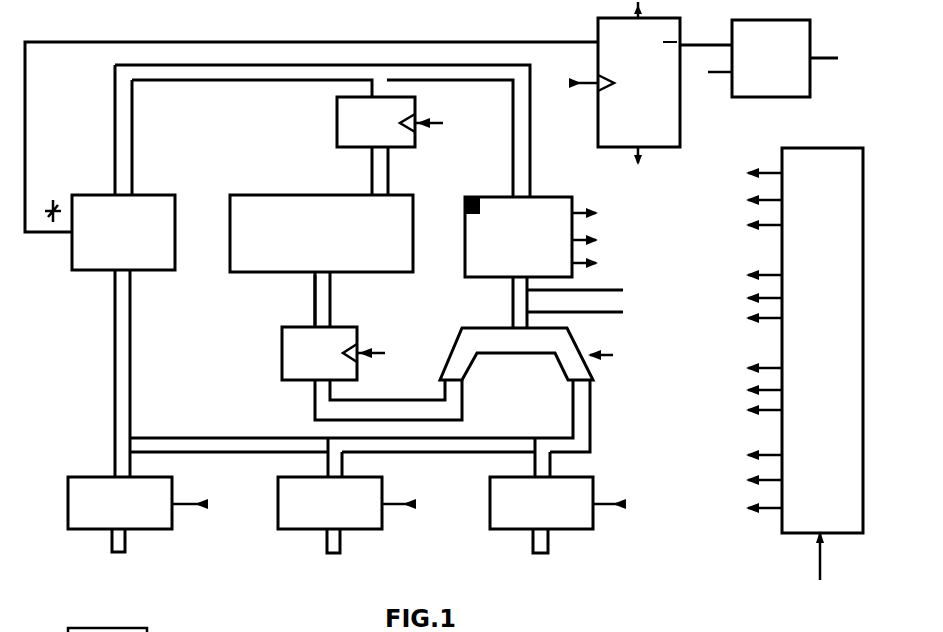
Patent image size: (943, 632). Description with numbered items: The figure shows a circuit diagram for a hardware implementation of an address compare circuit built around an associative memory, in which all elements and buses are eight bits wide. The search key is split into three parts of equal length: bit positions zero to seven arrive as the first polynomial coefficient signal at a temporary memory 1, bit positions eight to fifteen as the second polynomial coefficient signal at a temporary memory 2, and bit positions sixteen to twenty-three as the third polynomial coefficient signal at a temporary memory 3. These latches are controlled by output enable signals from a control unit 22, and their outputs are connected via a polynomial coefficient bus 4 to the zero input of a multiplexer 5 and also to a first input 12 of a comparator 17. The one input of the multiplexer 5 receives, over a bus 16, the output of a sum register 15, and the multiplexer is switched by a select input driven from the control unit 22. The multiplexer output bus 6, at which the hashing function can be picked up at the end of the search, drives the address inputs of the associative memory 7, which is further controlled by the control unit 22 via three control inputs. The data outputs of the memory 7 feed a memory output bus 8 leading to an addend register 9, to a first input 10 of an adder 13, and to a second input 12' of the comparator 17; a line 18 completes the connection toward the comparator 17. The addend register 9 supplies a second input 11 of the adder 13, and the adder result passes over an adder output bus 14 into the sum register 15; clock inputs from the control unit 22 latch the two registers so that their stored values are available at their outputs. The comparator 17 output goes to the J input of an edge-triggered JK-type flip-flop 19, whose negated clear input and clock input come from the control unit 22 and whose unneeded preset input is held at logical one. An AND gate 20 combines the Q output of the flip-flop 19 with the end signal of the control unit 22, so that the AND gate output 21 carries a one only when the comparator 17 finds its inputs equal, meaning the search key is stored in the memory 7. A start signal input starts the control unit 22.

The temporary memory 1 is at (574, 529).
The temporary memory 2 is at (365, 529).
The temporary memory 3 is at (148, 529).
The polynomial coefficient bus 4 is at (592, 440).
The multiplexer 5 is at (592, 370).
The multiplexer output bus 6 is at (590, 312).
The associative memory 7 is at (558, 197).
The memory output bus 8 is at (530, 140).
The addend register 9 is at (410, 148).
The first input of adder 10 is at (283, 195).
The second input of adder 11 is at (390, 195).
The first input of comparator 12 is at (144, 373).
The second input of comparator 12' is at (147, 130).
The adder 13 is at (373, 274).
The adder output bus 14 is at (315, 297).
The sum register 15 is at (282, 370).
The bus 16 is at (463, 400).
The comparator 17 is at (90, 195).
The control line 18 is at (150, 42).
The JK-type flip-flop 19 is at (598, 30).
The AND gate 20 is at (812, 40).
The AND gate output 21 is at (825, 60).
The control unit 22 is at (808, 148).